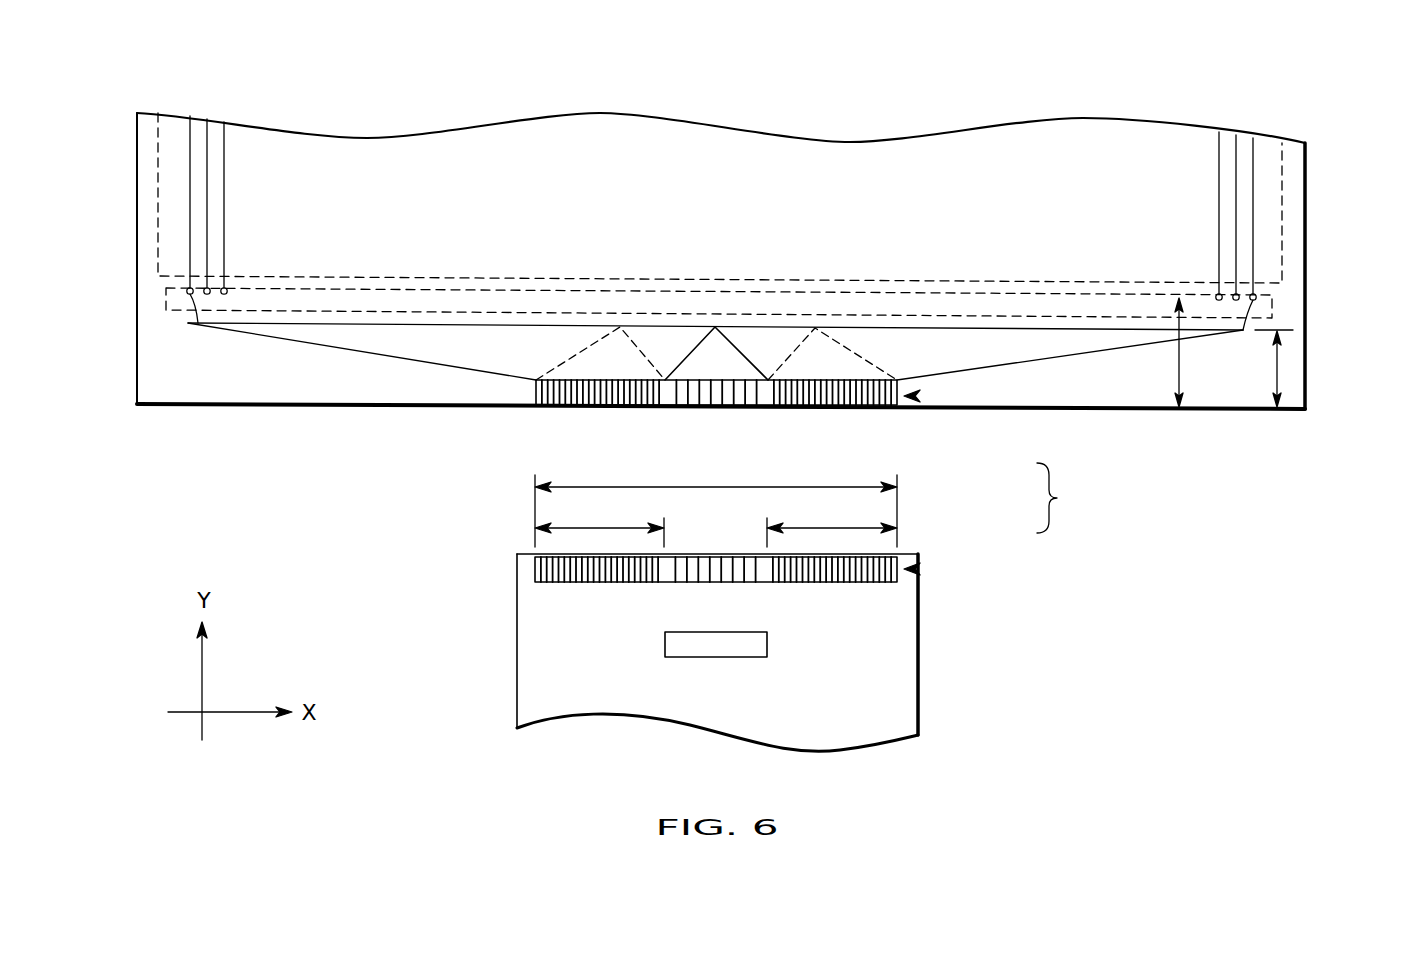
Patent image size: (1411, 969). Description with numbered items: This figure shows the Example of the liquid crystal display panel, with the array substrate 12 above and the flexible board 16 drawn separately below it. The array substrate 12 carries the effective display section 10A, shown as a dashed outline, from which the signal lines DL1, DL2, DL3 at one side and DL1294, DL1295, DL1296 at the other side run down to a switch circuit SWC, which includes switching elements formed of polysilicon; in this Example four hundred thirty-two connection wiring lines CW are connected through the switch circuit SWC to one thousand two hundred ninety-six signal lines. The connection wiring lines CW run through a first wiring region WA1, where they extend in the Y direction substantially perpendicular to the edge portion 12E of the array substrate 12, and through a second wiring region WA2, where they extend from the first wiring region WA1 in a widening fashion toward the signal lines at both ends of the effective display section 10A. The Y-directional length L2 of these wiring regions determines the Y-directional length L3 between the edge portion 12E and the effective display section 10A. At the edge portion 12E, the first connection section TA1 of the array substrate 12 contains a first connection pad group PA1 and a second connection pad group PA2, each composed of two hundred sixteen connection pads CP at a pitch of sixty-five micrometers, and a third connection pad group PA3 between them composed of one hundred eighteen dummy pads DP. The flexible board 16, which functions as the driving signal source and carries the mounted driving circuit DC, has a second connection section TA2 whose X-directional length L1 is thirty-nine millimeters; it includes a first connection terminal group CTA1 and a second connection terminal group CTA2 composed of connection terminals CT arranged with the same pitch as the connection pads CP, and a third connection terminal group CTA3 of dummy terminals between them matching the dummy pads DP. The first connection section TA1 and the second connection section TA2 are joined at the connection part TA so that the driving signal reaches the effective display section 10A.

The array substrate 12 is at (272, 409).
The edge portion of the array substrate 12E is at (347, 409).
The effective display section 10A is at (1282, 228).
The switch circuit SWC is at (1272, 307).
The signal line DL1 is at (190, 244).
The signal line DL2 is at (207, 223).
The signal line DL3 is at (224, 178).
The signal line DL1294 is at (1219, 178).
The signal line DL1295 is at (1236, 230).
The signal line DL1296 is at (1253, 195).
The connection wiring lines CW is at (416, 360).
The connection pads CP is at (536, 392).
The first connection pad group PA1 is at (665, 411).
The second connection pad group PA2 is at (897, 411).
The third connection pad group PA3 is at (767, 411).
The dummy pads DP is at (692, 388).
The first wiring region WA1 is at (598, 355).
The second wiring region WA2 is at (494, 340).
The X-directional length of the second connection section L1 is at (716, 502).
The Y-directional length of the wiring regions L2 is at (1270, 368).
The Y-directional length between edge portion and effective display section L3 is at (1192, 352).
The first connection section TA1 is at (917, 396).
The second connection section TA2 is at (917, 569).
The connection part TA is at (1064, 498).
The flexible board 16 is at (918, 657).
The connection terminals CT is at (535, 568).
The first connection terminal group CTA1 is at (535, 584).
The second connection terminal group CTA2 is at (897, 584).
The third connection terminal group CTA3 is at (665, 584).
The driving circuit DC is at (730, 657).